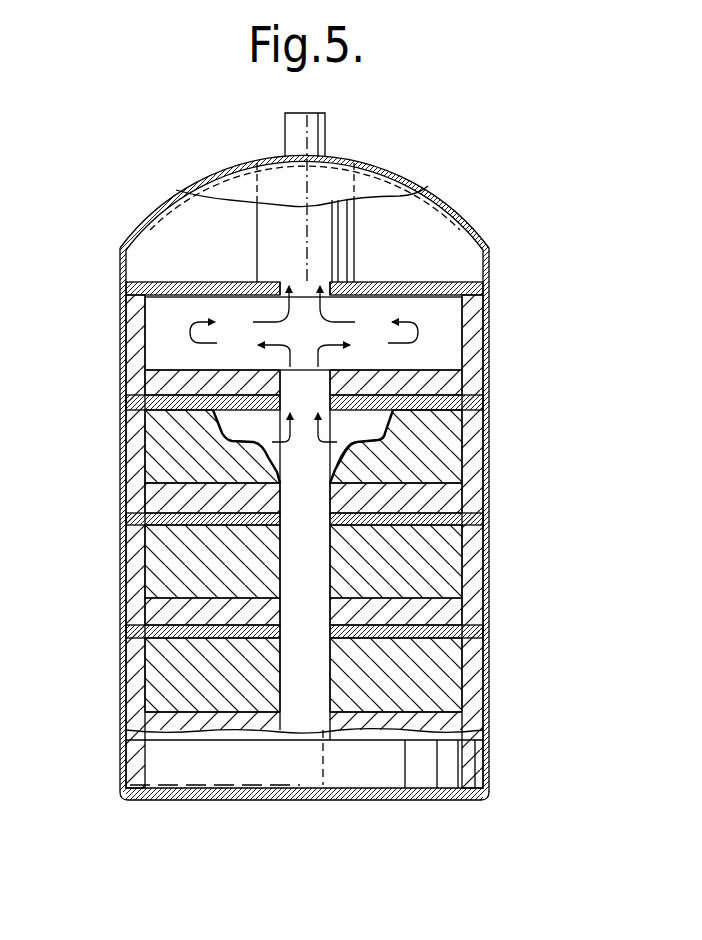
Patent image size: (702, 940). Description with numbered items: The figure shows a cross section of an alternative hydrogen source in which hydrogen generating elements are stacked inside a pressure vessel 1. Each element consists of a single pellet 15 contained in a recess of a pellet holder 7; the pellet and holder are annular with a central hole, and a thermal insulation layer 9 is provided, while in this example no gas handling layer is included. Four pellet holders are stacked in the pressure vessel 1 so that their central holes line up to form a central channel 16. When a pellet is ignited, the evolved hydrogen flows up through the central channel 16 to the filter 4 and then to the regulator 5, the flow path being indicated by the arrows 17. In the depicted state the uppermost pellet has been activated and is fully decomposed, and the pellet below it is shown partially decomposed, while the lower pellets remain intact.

The pressure vessel 1 is at (119, 251).
The filter 4 is at (340, 235).
The regulator 5 is at (298, 143).
The pellet holder 7 is at (138, 353).
The thermal insulation layer 9 is at (486, 290).
The pellet 15 is at (168, 457).
The central channel 16 is at (300, 692).
The arrows 17 is at (318, 425).